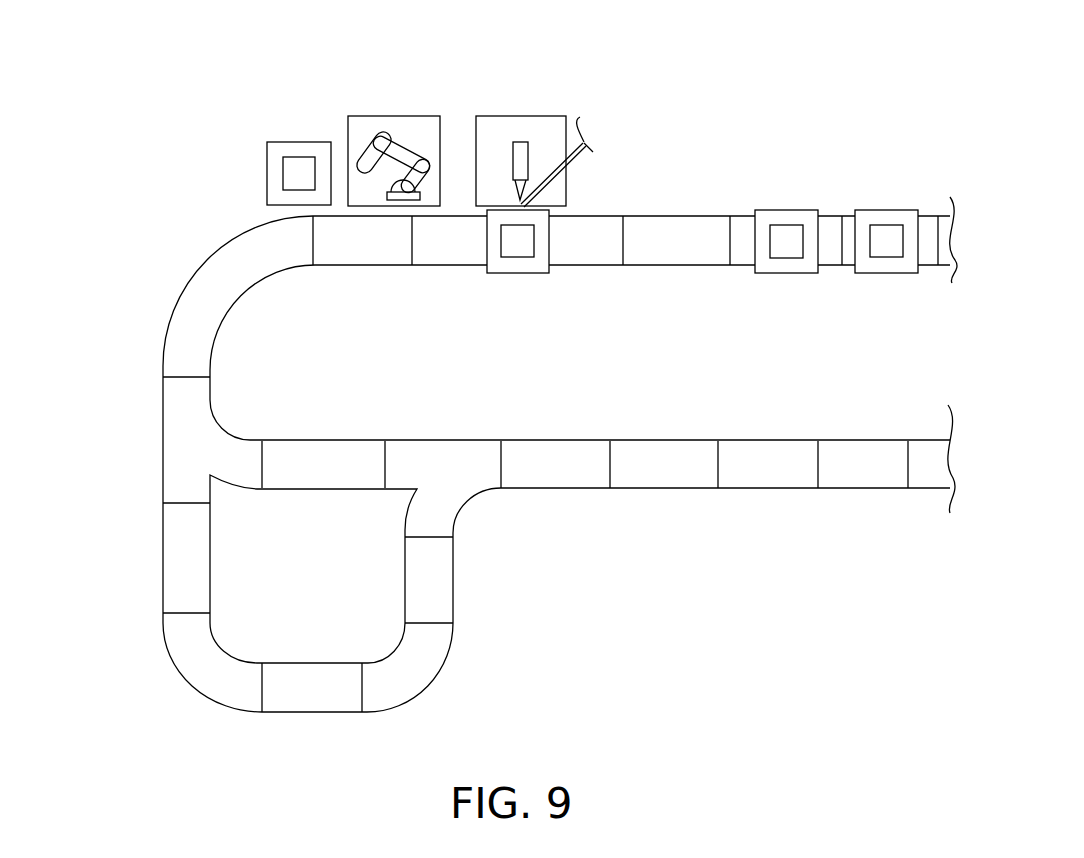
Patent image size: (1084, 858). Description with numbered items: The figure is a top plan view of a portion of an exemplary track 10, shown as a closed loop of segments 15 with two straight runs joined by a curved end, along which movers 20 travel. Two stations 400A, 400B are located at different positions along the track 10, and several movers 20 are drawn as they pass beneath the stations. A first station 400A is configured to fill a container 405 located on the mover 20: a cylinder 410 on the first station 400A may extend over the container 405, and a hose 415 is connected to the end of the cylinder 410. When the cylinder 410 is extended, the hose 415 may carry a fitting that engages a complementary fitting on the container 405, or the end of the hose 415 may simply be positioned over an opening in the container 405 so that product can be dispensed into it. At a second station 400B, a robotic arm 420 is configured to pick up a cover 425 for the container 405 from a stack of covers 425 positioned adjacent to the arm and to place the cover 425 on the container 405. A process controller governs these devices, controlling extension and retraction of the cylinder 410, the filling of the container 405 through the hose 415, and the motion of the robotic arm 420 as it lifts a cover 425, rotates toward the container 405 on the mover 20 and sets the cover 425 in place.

The track 10 is at (770, 166).
The track segment 15 is at (178, 457).
The mover 20 is at (513, 273).
The container 405 is at (520, 240).
The first station 400A is at (500, 138).
The second station 400B is at (367, 128).
The cylinder 410 is at (520, 150).
The hose 415 is at (575, 140).
The robotic arm 420 is at (405, 160).
The cover 425 is at (297, 170).